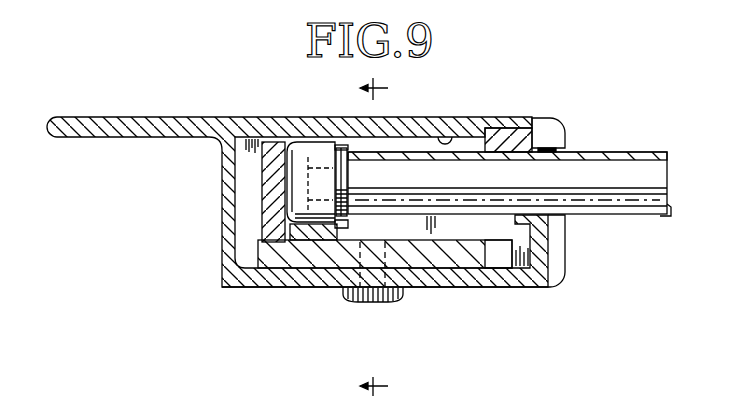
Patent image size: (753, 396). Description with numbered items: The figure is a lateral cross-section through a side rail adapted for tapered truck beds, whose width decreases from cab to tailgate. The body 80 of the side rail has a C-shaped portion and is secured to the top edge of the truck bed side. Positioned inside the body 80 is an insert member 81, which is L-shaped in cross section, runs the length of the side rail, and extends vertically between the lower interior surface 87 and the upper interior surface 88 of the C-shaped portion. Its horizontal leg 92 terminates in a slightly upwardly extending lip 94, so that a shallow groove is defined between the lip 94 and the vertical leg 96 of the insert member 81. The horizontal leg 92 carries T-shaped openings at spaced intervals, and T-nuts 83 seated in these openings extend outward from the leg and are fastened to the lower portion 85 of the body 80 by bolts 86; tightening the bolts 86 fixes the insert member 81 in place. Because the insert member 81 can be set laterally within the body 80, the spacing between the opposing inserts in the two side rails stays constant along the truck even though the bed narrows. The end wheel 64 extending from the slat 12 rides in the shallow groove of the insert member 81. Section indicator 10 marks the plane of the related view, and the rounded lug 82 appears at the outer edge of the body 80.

The section line arrows 10 is at (370, 232).
The slat 12 is at (597, 168).
The end wheel 64 is at (323, 148).
The body 80 is at (211, 116).
The insert member 81 is at (247, 207).
The lug 82 is at (562, 124).
The T-nut 83 is at (437, 262).
The lower portion 85 is at (475, 287).
The bolt 86 is at (377, 302).
The lower interior surface 87 is at (302, 272).
The upper interior surface 88 is at (462, 126).
The horizontal leg 92 is at (290, 242).
The lip 94 is at (348, 226).
The vertical leg 96 is at (262, 172).